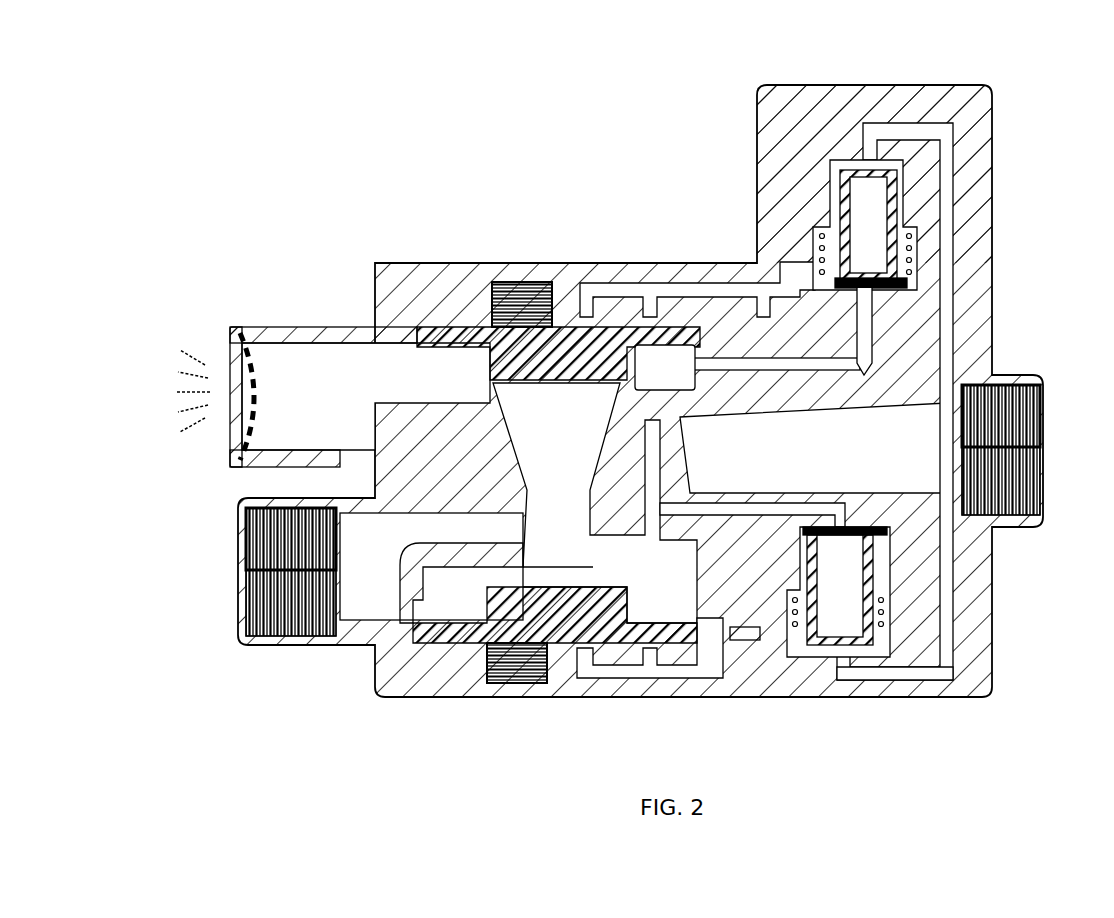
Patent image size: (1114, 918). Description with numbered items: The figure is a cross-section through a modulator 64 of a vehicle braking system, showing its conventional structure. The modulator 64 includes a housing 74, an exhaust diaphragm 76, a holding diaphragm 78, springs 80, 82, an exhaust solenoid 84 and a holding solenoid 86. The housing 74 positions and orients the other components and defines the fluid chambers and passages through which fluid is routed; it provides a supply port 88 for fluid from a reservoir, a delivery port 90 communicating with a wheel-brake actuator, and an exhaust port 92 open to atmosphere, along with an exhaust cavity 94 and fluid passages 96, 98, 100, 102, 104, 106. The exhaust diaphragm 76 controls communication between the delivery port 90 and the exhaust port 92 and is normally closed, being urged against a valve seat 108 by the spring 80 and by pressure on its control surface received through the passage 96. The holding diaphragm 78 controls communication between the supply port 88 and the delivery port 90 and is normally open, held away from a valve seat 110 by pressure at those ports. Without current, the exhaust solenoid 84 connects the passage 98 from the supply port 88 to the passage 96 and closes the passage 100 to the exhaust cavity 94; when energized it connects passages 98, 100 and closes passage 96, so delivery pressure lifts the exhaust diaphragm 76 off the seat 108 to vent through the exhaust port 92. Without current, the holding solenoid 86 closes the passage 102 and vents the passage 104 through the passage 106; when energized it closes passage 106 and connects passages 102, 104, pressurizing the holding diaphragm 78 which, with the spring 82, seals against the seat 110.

The modulator 64 is at (698, 158).
The housing 74 is at (827, 120).
The exhaust diaphragm 76 is at (578, 327).
The holding diaphragm 78 is at (560, 643).
The spring 80 is at (520, 282).
The spring 82 is at (520, 683).
The exhaust solenoid 84 is at (905, 208).
The holding solenoid 86 is at (877, 572).
The supply port 88 is at (1046, 407).
The delivery port 90 is at (240, 612).
The exhaust port 92 is at (268, 340).
The exhaust cavity 94 is at (665, 367).
The fluid passage 96 is at (690, 283).
The fluid passage 98 is at (955, 262).
The fluid passage 100 is at (858, 360).
The fluid passage 102 is at (946, 620).
The fluid passage 104 is at (756, 642).
The fluid passage 106 is at (748, 503).
The valve seat 108 is at (612, 398).
The valve seat 110 is at (600, 572).